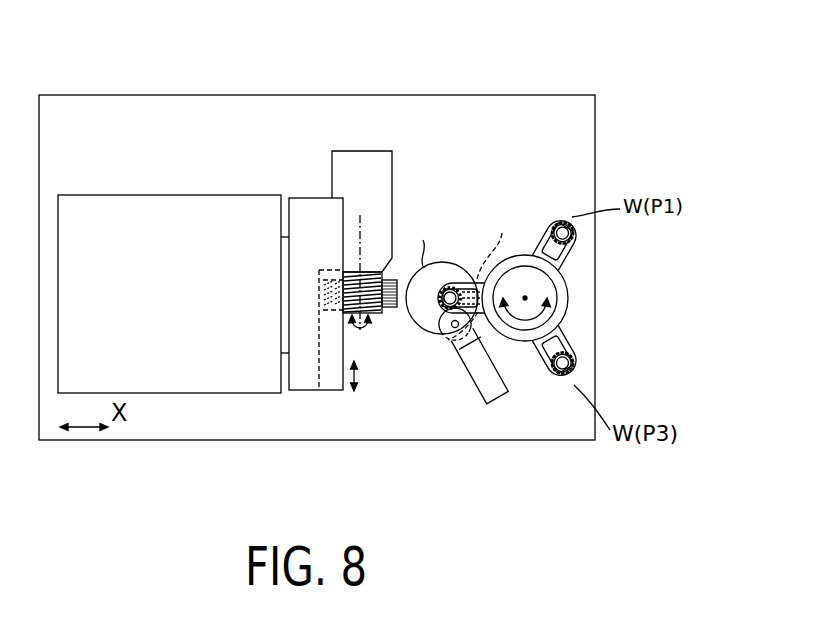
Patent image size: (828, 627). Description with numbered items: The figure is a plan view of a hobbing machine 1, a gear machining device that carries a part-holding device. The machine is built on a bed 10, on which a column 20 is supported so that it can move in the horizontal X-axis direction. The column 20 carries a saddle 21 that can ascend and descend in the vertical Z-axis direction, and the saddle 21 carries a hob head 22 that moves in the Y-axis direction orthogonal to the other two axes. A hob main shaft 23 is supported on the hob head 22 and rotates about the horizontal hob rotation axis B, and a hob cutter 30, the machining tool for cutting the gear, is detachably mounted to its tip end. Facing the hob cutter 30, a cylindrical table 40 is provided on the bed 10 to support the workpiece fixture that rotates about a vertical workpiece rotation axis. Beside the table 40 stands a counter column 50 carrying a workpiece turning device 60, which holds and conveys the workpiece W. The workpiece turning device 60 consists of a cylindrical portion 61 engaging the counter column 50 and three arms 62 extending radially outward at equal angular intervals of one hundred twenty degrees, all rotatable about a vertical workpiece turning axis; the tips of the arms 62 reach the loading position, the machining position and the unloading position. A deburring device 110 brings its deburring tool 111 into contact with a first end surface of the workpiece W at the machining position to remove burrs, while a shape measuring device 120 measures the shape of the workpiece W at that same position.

The hobbing machine 1 is at (646, 26).
The bed 10 is at (595, 112).
The column 20 is at (152, 195).
The saddle 21 is at (302, 198).
The hob head 22 is at (392, 175).
The hob main shaft 23 is at (380, 318).
The hob cutter 30 is at (398, 305).
The table 40 is at (445, 262).
The counter column 50 is at (556, 292).
The workpiece turning device 60 is at (567, 306).
The cylindrical portion 61 is at (572, 318).
The arms 62 is at (462, 284).
The deburring device 110 is at (480, 400).
The deburring tool 111 is at (438, 338).
The shape measuring device 120 is at (487, 276).